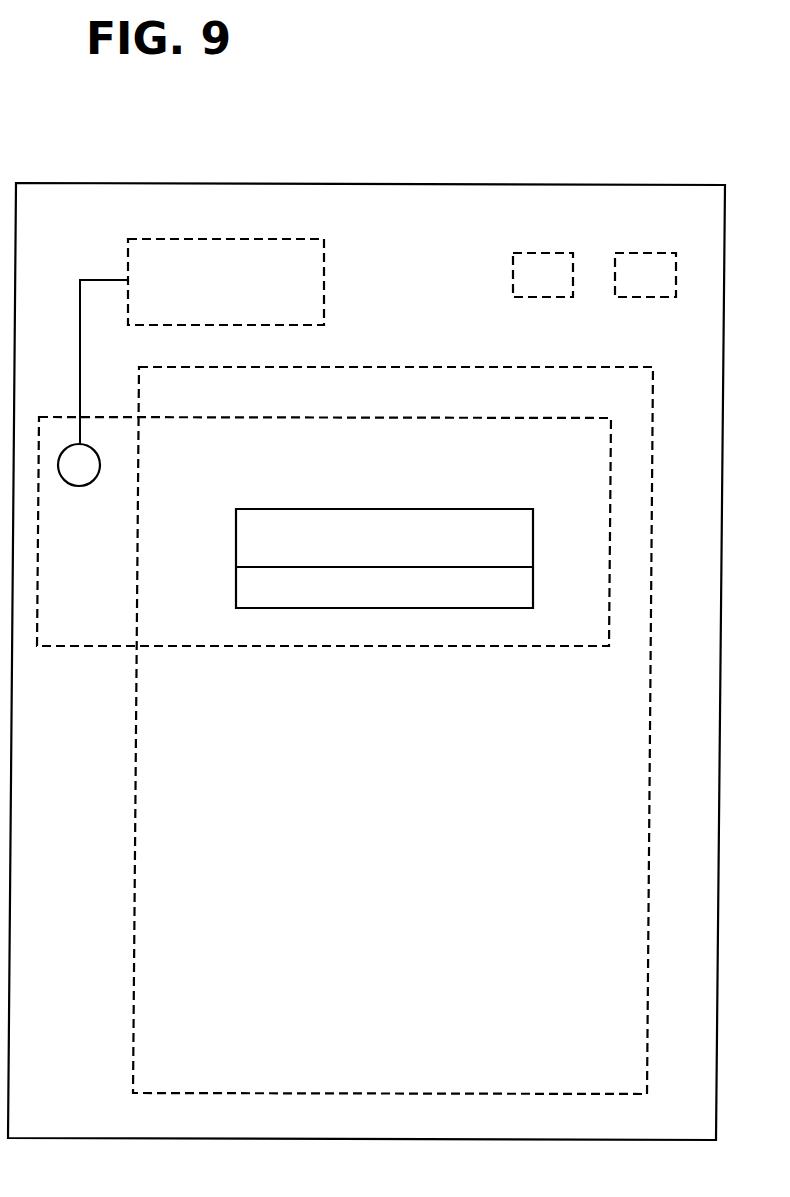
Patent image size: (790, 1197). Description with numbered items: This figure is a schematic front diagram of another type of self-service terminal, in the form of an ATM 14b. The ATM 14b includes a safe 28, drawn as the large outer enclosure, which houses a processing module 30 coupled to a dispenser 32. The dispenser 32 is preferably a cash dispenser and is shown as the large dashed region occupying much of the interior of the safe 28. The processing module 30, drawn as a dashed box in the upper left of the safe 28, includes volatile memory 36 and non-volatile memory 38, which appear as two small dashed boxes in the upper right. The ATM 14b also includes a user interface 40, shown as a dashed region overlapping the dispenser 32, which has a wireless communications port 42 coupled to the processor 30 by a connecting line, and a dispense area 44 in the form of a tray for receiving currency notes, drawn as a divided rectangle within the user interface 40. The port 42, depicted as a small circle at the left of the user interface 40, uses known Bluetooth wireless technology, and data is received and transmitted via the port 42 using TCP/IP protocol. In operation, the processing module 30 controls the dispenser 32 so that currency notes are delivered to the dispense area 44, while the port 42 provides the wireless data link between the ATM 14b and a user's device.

The ATM 14b is at (637, 144).
The safe 28 is at (467, 183).
The processing module 30 is at (288, 239).
The dispenser 32 is at (427, 366).
The volatile memory 36 is at (547, 253).
The non-volatile memory 38 is at (649, 253).
The user interface 40 is at (316, 647).
The wireless communications port 42 is at (77, 487).
The dispense area 44 is at (351, 509).